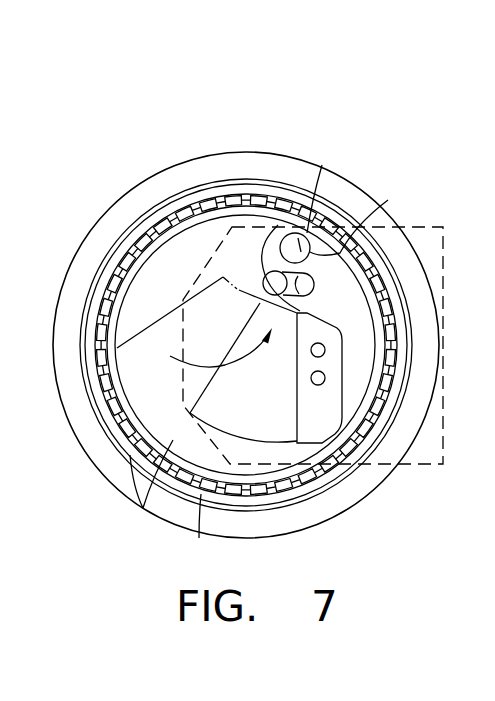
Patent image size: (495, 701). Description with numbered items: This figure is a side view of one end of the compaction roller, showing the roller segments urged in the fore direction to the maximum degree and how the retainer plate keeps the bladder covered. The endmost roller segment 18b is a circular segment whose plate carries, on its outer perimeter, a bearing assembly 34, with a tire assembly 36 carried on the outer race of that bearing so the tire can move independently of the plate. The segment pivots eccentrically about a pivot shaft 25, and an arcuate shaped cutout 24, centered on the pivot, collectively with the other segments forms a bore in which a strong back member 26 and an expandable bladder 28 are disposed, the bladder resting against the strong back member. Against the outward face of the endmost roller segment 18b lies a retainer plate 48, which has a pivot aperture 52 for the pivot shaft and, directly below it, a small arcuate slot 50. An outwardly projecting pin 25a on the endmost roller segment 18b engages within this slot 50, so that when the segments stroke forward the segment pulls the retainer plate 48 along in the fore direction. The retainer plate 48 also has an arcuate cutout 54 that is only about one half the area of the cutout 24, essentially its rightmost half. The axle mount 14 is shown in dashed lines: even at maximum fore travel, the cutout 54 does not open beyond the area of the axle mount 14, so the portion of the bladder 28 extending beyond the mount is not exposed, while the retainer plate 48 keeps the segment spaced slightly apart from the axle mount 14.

The endmost roller segment 18b is at (155, 148).
The axle mount 14 is at (196, 538).
The arcuate shaped cutout 24 is at (144, 322).
The pivot shaft 25 is at (343, 238).
The pin 25a is at (301, 250).
The strong back member 26 is at (333, 413).
The expandable bladder 28 is at (274, 409).
The bearing assembly 34 is at (140, 447).
The tire assembly 36 is at (336, 508).
The retainer plate 48 is at (142, 506).
The arcuate slot 50 is at (305, 297).
The pivot aperture 52 is at (287, 256).
The arcuate cutout 54 is at (205, 350).